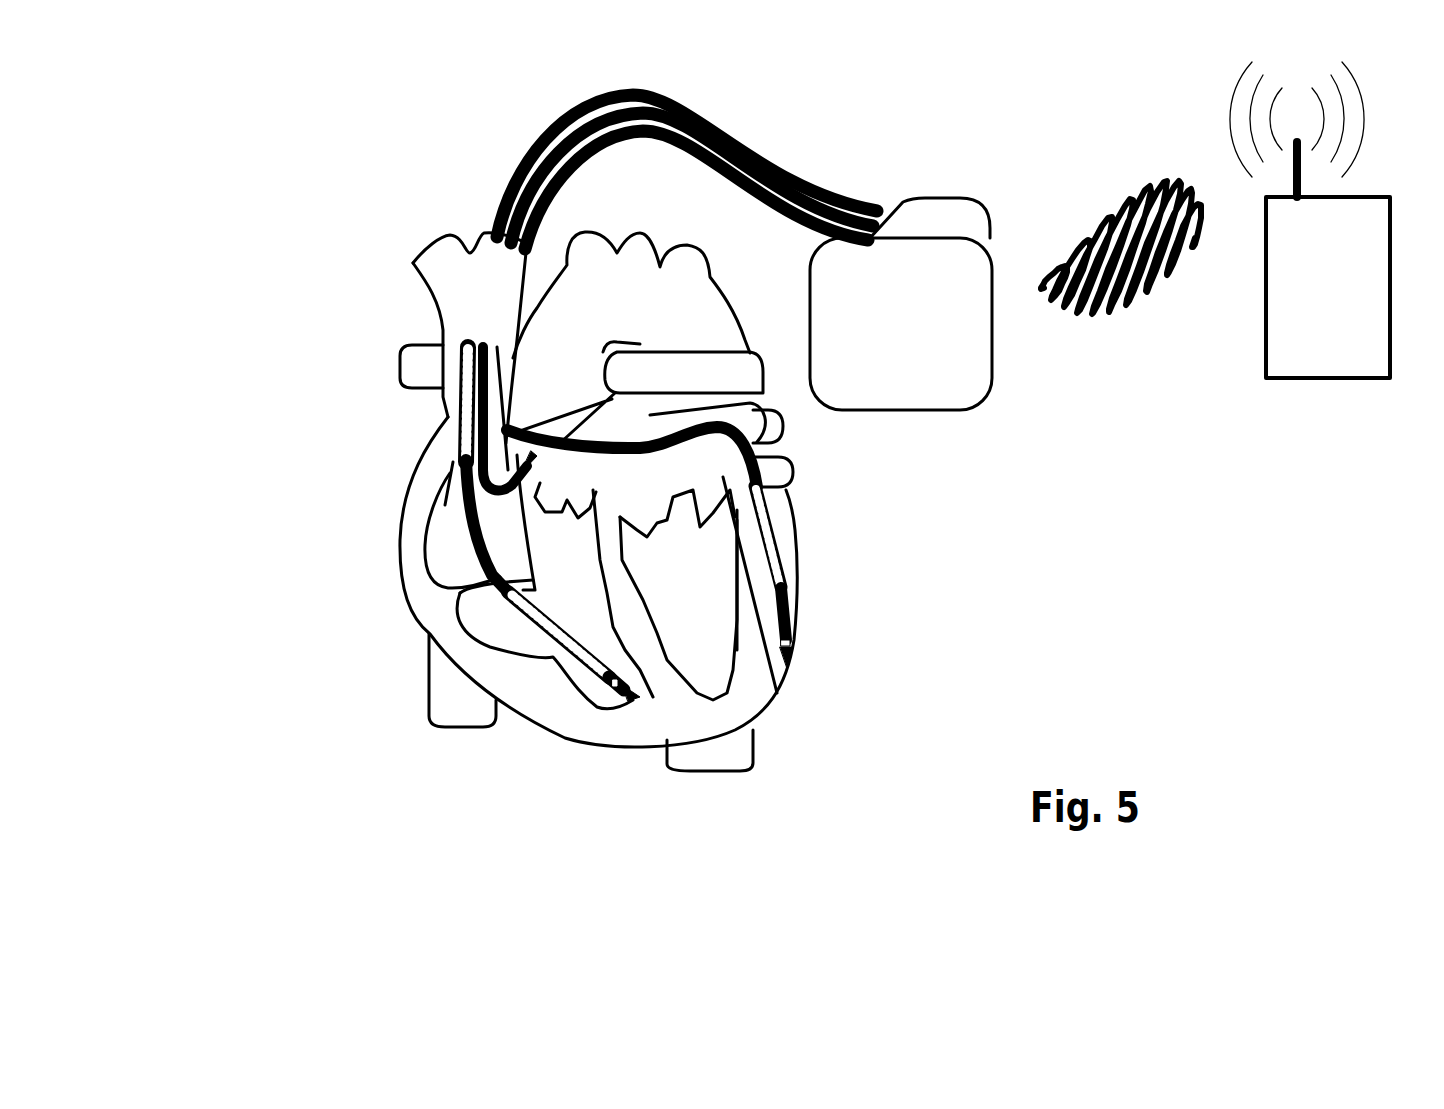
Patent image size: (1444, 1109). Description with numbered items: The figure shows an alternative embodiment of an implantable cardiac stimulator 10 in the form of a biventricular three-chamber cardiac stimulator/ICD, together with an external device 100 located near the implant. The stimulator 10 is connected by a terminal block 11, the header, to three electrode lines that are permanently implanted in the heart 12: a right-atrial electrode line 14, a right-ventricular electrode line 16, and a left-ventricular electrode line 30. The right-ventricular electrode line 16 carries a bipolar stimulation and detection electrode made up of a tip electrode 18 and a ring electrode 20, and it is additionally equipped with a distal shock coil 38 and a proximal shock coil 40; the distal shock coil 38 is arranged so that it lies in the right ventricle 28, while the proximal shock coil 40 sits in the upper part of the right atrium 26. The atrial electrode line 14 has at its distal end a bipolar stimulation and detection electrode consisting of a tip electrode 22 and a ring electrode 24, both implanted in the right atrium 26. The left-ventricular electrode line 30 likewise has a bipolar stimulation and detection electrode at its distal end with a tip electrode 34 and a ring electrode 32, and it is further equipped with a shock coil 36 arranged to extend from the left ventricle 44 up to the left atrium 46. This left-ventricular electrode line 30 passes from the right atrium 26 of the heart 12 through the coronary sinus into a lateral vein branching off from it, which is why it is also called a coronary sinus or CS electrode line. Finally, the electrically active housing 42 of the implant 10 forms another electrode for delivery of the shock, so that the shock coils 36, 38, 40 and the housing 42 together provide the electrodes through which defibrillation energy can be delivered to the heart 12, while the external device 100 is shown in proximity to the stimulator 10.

The implantable cardiac stimulator 10 is at (1064, 384).
The terminal block 11 is at (930, 215).
The heart 12 is at (362, 622).
The right-atrial electrode line 14 is at (602, 101).
The right-ventricular electrode line 16 is at (530, 160).
The tip electrode 18 is at (640, 700).
The ring electrode 20 is at (617, 697).
The tip electrode 22 is at (515, 462).
The ring electrode 24 is at (505, 480).
The right atrium 26 is at (448, 538).
The right ventricle 28 is at (530, 650).
The left-ventricular electrode line 30 is at (780, 215).
The ring electrode 32 is at (792, 645).
The tip electrode 34 is at (790, 657).
The shock coil 36 is at (782, 562).
The distal shock coil 38 is at (530, 605).
The proximal shock coil 40 is at (460, 418).
The electrically active housing 42 is at (933, 373).
The left ventricle 44 is at (710, 676).
The left atrium 46 is at (787, 668).
The external device 100 is at (1331, 388).